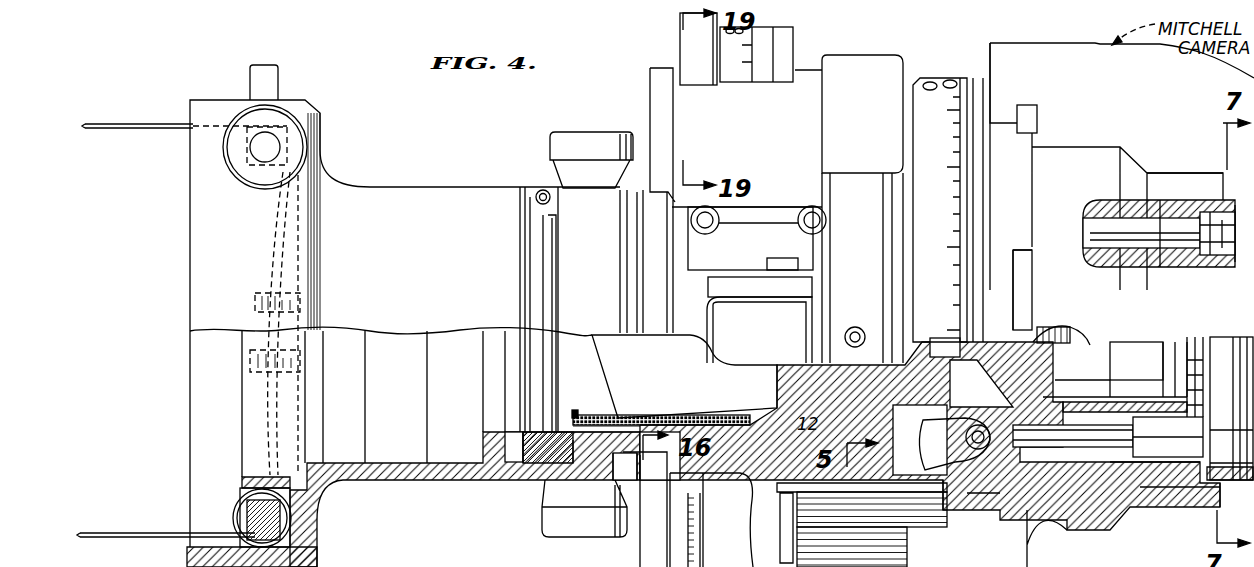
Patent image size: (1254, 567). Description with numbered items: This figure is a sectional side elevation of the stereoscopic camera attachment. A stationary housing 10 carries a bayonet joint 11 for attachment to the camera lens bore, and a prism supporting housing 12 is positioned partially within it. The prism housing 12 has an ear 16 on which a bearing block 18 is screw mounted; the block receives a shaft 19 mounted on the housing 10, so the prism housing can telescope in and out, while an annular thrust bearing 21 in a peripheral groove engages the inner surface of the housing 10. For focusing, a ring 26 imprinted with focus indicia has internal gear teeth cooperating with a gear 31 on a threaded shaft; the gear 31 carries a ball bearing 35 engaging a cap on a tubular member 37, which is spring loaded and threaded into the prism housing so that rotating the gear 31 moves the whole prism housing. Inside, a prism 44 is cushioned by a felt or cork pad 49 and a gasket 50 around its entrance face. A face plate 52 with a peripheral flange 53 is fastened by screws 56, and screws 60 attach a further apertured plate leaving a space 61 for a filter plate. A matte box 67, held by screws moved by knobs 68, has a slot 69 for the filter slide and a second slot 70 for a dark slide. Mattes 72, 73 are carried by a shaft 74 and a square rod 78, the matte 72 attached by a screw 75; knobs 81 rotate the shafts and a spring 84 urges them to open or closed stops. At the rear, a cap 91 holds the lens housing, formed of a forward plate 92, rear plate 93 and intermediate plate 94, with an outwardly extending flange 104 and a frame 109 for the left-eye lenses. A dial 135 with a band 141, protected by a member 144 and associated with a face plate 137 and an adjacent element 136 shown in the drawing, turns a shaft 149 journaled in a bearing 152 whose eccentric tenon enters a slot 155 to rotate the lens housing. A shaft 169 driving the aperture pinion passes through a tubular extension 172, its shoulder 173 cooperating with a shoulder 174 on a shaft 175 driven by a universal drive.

The stationary housing 10 is at (1181, 170).
The bayonet joint 11 is at (1040, 118).
The prism supporting housing 12 is at (1133, 495).
The ear 16 is at (720, 285).
The bearing block 18 is at (795, 312).
The shaft 19 is at (812, 330).
The annular thrust bearing 21 is at (1182, 490).
The ring 26 is at (922, 79).
The gear 31 is at (960, 527).
The ball bearing 35 is at (793, 503).
The tubular member 37 is at (797, 553).
The prism 44 is at (620, 337).
The felt or cork pad 49 is at (683, 417).
The felt or cork gasket 50 is at (580, 417).
The face plate 52 is at (643, 190).
The peripheral flange 53 is at (600, 460).
The screw 56 is at (588, 472).
The screw 60 is at (582, 467).
The space 61 is at (500, 390).
The matte box 67 is at (370, 184).
The knob 68 is at (556, 150).
The slot 69 is at (548, 244).
The second slot 70 is at (528, 224).
The matte 72 is at (166, 129).
The matte 73 is at (236, 532).
The shaft 74 is at (247, 146).
The screw 75 is at (280, 88).
The square rod 78 is at (237, 512).
The knob 81 is at (248, 108).
The spring 84 is at (272, 226).
The cap 91 is at (1234, 499).
The forward plate 92 is at (1217, 352).
The rear plate 93 is at (1245, 264).
The intermediate plate 94 is at (1212, 258).
The outwardly extending flange 104 is at (1195, 352).
The frame 109 is at (1187, 360).
The dial 135 is at (680, 38).
The housing 136 is at (802, 70).
The face plate 137 is at (650, 80).
The band 141 is at (734, 82).
The member 144 is at (784, 70).
The shaft 149 is at (1100, 228).
The bearing 152 is at (1150, 200).
The slot 155 is at (1165, 262).
The shaft 169 is at (1105, 435).
The tubular extension 172 is at (1168, 450).
The shoulder 173 is at (1100, 455).
The shoulder 174 is at (1055, 455).
The shaft 175 is at (1045, 330).